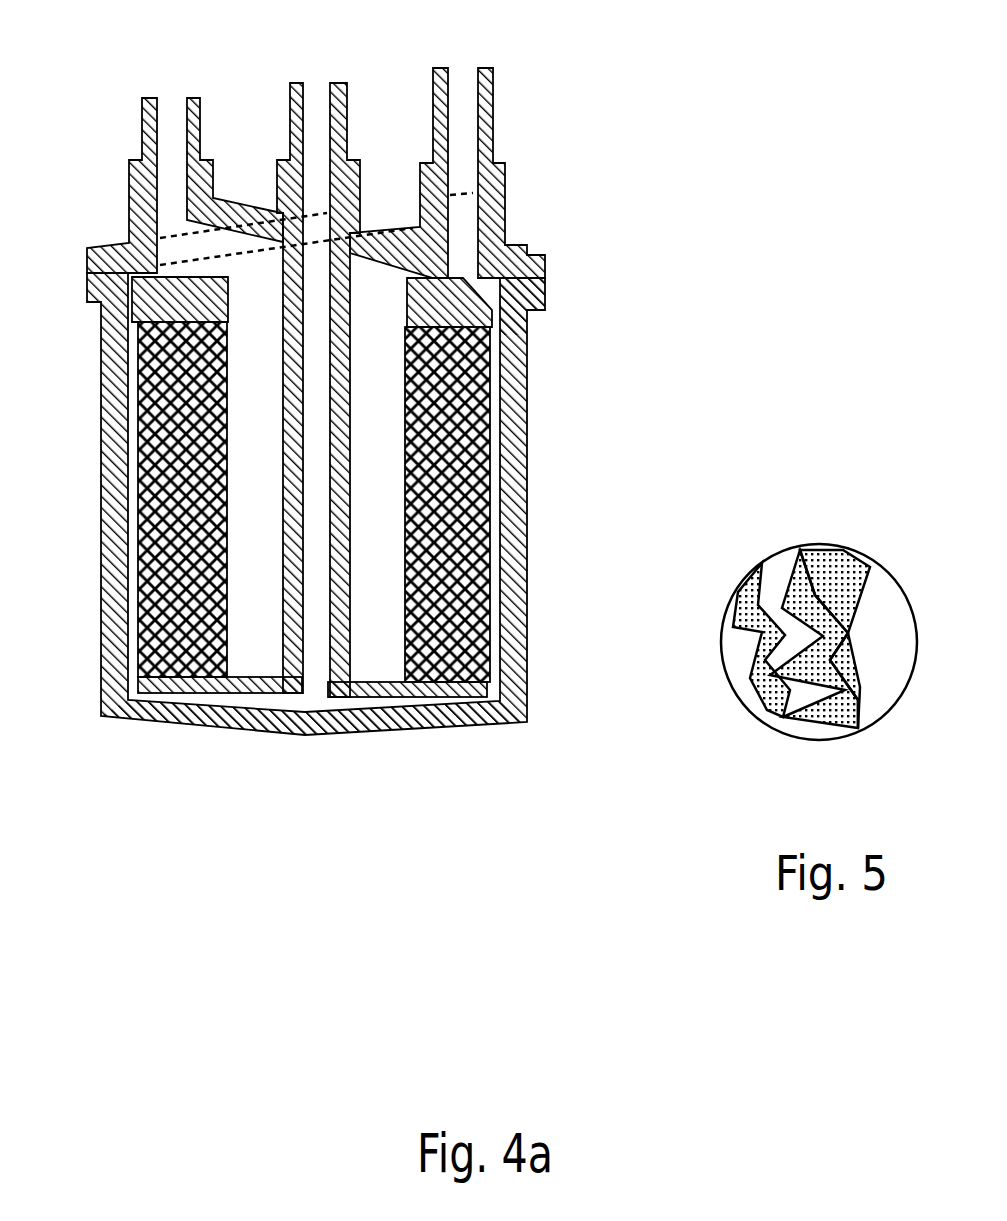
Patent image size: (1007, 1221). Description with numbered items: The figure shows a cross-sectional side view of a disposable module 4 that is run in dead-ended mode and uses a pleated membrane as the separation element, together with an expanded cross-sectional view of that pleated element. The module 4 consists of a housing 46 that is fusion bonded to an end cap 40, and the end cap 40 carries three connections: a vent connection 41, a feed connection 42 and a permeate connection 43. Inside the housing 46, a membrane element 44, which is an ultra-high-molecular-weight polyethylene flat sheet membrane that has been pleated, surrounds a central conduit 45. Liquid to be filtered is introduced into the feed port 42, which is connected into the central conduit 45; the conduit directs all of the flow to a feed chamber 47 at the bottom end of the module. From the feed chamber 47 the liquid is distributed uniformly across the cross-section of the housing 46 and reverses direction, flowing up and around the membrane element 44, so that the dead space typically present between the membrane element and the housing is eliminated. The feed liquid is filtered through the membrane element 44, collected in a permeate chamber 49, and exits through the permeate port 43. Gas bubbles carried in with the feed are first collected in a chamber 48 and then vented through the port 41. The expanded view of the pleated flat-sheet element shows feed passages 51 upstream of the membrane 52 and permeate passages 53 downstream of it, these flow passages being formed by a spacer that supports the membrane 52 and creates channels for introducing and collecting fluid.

In FIG. 4A, the disposable module 4 is at (572, 363).
In FIG. 4A, the end cap 40 is at (522, 243).
In FIG. 4A, the vent connection 41 is at (485, 67).
In FIG. 4A, the feed connection 42 is at (337, 82).
In FIG. 4A, the permeate connection 43 is at (195, 97).
In FIG. 4A, the membrane element 44 is at (157, 452).
In FIG. 4A, the central conduit 45 is at (280, 572).
In FIG. 4A, the housing 46 is at (215, 722).
In FIG. 4A, the feed chamber 47 is at (317, 700).
In FIG. 4A, the gas collection chamber 48 is at (492, 287).
In FIG. 4A, the permeate chamber 49 is at (150, 219).
In FIG. 5, the feed passages 51 is at (755, 575).
In FIG. 5, the membrane 52 is at (783, 560).
In FIG. 5, the permeate passages 53 is at (823, 552).